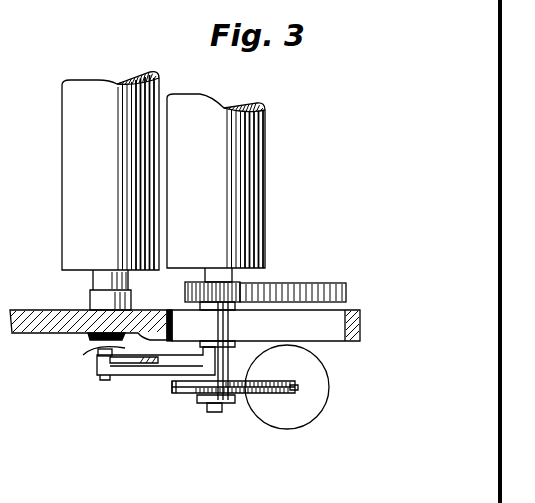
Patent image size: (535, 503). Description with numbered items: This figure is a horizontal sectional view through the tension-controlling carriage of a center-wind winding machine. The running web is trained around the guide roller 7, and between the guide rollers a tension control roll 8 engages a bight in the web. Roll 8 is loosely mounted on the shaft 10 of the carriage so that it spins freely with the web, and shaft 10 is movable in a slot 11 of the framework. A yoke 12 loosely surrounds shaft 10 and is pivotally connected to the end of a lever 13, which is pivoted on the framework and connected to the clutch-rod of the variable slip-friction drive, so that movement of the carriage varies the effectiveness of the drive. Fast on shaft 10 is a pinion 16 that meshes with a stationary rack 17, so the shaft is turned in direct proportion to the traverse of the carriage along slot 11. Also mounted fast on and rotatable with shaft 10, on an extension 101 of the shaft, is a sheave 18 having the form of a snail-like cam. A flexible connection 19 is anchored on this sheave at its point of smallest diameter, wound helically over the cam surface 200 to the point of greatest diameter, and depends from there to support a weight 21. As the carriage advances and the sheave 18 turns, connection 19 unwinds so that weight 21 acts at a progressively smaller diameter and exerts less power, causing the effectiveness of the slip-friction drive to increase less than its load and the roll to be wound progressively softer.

The guide roller 7 is at (70, 203).
The tension control roll 8 is at (262, 172).
The pinion 16 is at (257, 290).
The stationary rack 17 is at (297, 285).
The shaft 10 is at (229, 330).
The slot 11 is at (185, 327).
The lever 13 is at (98, 351).
The yoke 12 is at (125, 378).
The sheave 18 is at (172, 384).
The flexible connection 19 is at (173, 389).
The extension of shaft 101 is at (217, 413).
The cam surface 200 is at (270, 394).
The weight 21 is at (283, 418).